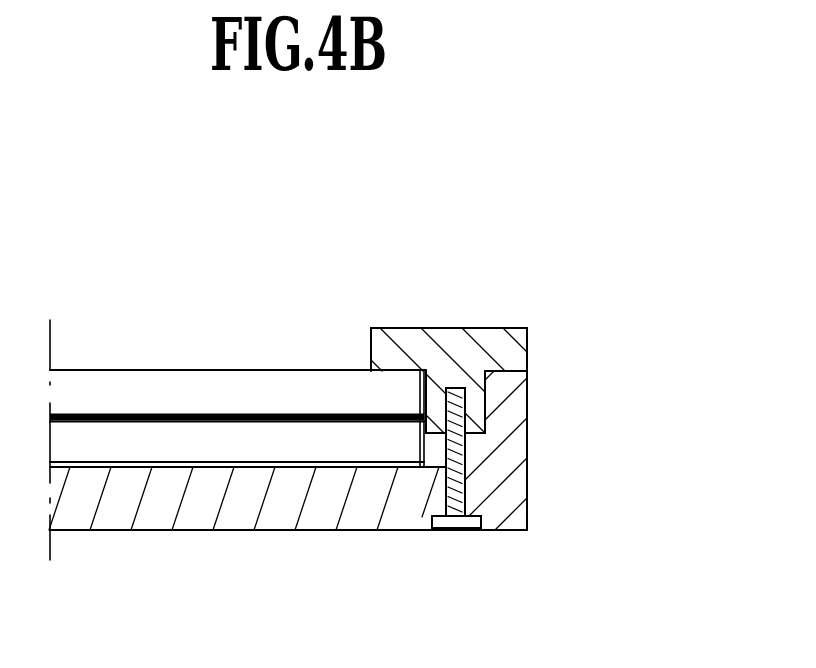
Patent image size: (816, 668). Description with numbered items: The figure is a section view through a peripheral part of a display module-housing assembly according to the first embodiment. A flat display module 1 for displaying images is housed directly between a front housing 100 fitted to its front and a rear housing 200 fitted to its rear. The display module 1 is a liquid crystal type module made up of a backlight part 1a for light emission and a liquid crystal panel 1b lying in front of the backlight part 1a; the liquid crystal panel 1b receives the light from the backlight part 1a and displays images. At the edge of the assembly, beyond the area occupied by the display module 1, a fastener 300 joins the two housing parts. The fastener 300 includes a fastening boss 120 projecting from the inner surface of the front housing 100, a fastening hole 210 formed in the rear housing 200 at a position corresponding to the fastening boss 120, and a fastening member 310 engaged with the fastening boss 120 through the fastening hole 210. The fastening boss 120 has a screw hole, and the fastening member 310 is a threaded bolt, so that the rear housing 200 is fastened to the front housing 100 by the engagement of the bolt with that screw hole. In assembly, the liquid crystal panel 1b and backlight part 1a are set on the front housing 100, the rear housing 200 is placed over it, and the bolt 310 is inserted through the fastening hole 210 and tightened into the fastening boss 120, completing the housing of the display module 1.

The flat display module 1 is at (238, 339).
The backlight part 1a is at (243, 442).
The liquid crystal panel 1b is at (152, 385).
The front housing 100 is at (487, 322).
The rear housing 200 is at (536, 390).
The fastening boss 120 is at (478, 421).
The fastening hole 210 is at (459, 485).
The fastening member 310 is at (463, 524).
The fastener 300 is at (584, 469).